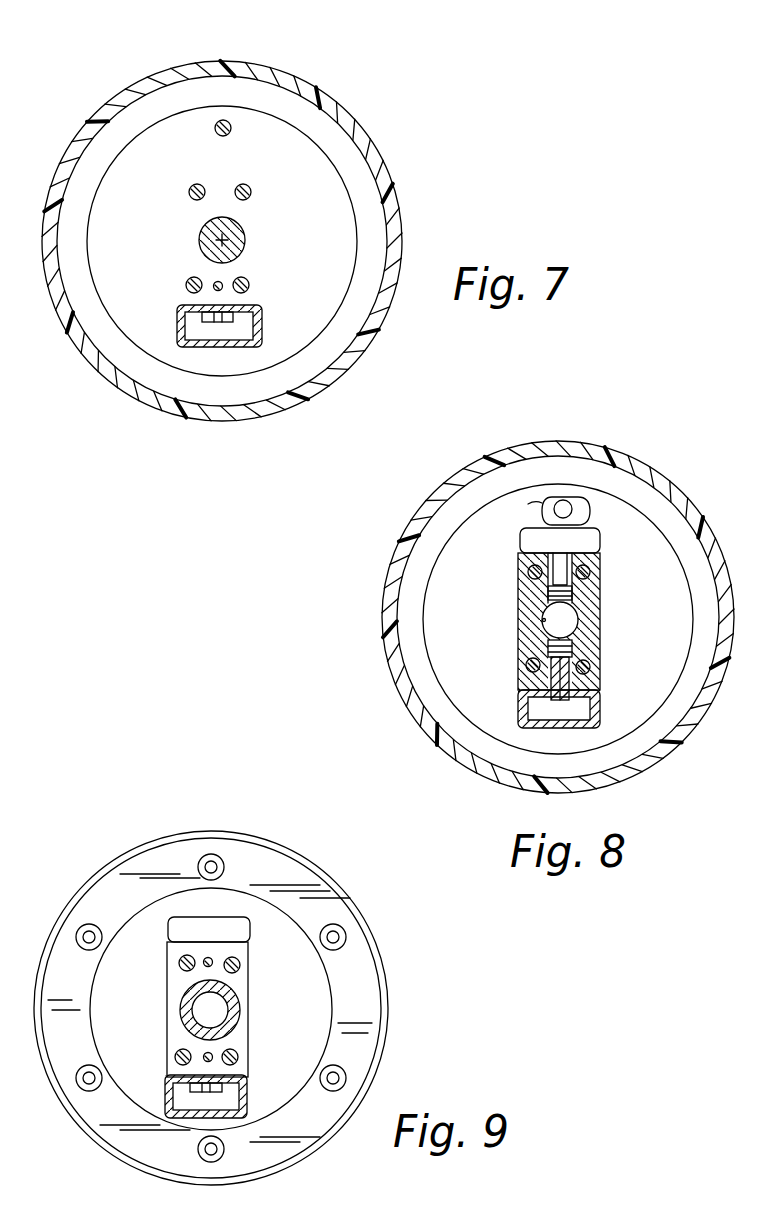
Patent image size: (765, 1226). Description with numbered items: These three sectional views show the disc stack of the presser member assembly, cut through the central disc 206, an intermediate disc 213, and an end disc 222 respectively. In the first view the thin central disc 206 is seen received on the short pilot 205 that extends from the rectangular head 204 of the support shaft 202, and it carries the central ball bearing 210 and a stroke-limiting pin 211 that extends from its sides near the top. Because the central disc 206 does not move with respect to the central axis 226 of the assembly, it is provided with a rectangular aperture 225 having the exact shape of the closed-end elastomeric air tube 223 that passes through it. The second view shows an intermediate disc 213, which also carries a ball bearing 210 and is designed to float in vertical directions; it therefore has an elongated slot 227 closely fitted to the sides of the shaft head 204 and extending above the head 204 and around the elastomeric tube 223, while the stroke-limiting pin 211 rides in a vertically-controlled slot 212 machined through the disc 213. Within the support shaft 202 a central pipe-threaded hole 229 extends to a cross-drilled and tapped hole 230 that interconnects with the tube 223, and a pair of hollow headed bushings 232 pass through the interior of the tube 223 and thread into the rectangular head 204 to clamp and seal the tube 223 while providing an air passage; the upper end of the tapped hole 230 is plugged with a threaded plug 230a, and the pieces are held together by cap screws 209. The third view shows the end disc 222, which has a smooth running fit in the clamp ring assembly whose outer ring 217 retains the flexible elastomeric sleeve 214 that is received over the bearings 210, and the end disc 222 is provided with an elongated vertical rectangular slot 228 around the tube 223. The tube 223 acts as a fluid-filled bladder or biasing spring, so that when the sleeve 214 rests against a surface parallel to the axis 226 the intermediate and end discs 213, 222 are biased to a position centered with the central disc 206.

In FIG. 9, the support shaft 202 is at (251, 1049).
In FIG. 8, the rectangular head 204 is at (592, 547).
In FIG. 7, the pilot 205 is at (240, 230).
In FIG. 7, the central disc 206 is at (158, 237).
In FIG. 7, the cap screws 209 is at (253, 185).
In FIG. 8, the cap screws 209 is at (589, 579).
In FIG. 9, the cap screws 209 is at (240, 968).
In FIG. 7, the ball bearing 210 is at (108, 148).
In FIG. 8, the ball bearing 210 is at (463, 518).
In FIG. 7, the stroke-limiting pin 211 is at (213, 130).
In FIG. 8, the stroke-limiting pin 211 is at (542, 504).
In FIG. 8, the vertically-controlled slot 212 is at (588, 513).
In FIG. 8, the intermediate disc 213 is at (477, 626).
In FIG. 9, the intermediate disc 213 is at (210, 854).
In FIG. 7, the sleeve 214 is at (219, 60).
In FIG. 8, the sleeve 214 is at (582, 444).
In FIG. 9, the sleeve 214 is at (257, 834).
In FIG. 9, the outer ring 217 is at (125, 872).
In FIG. 9, the end disc 222 is at (140, 1027).
In FIG. 7, the elastomeric air tube 223 is at (183, 305).
In FIG. 8, the elastomeric air tube 223 is at (526, 708).
In FIG. 7, the rectangular aperture 225 is at (187, 353).
In FIG. 7, the central axis 226 is at (241, 248).
In FIG. 8, the elongated slot 227 is at (522, 545).
In FIG. 9, the elongated vertical rectangular slot 228 is at (170, 932).
In FIG. 8, the pipe-threaded hole 229 is at (542, 620).
In FIG. 8, the cross-drilled and tapped hole 230 is at (577, 648).
In FIG. 8, the threaded plug 230a is at (575, 598).
In FIG. 8, the headed bushing 232 is at (570, 700).